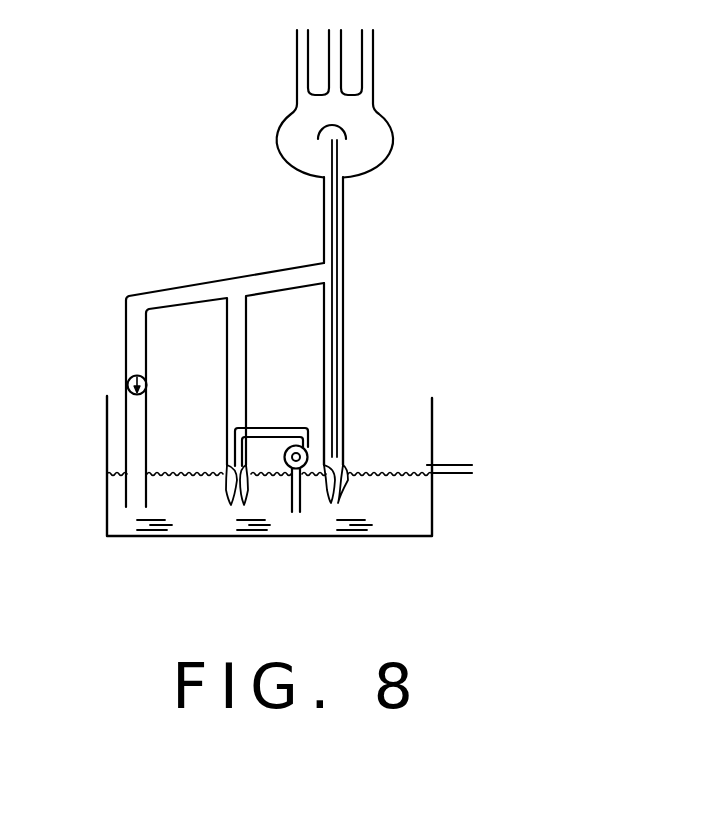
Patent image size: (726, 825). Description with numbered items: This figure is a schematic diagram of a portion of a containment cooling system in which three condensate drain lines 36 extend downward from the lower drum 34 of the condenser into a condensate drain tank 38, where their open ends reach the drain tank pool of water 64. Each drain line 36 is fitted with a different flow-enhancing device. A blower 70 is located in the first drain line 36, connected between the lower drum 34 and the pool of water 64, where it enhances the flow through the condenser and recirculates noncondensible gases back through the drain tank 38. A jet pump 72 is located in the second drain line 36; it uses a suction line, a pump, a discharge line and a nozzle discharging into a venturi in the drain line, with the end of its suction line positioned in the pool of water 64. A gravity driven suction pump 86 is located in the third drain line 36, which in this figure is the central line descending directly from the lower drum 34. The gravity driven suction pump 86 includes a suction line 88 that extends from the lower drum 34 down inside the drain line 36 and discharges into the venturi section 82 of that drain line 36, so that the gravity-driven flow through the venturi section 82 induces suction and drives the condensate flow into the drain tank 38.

The lower drum 34 is at (387, 133).
The condensate drain line 36 is at (146, 343).
The condensate drain tank 38 is at (432, 518).
The drain tank pool of water 64 is at (400, 527).
The blower 70 is at (146, 385).
The jet pump 72 is at (257, 415).
The venturi section 82 is at (347, 469).
The gravity driven suction pump 86 is at (368, 344).
The suction line 88 is at (338, 247).